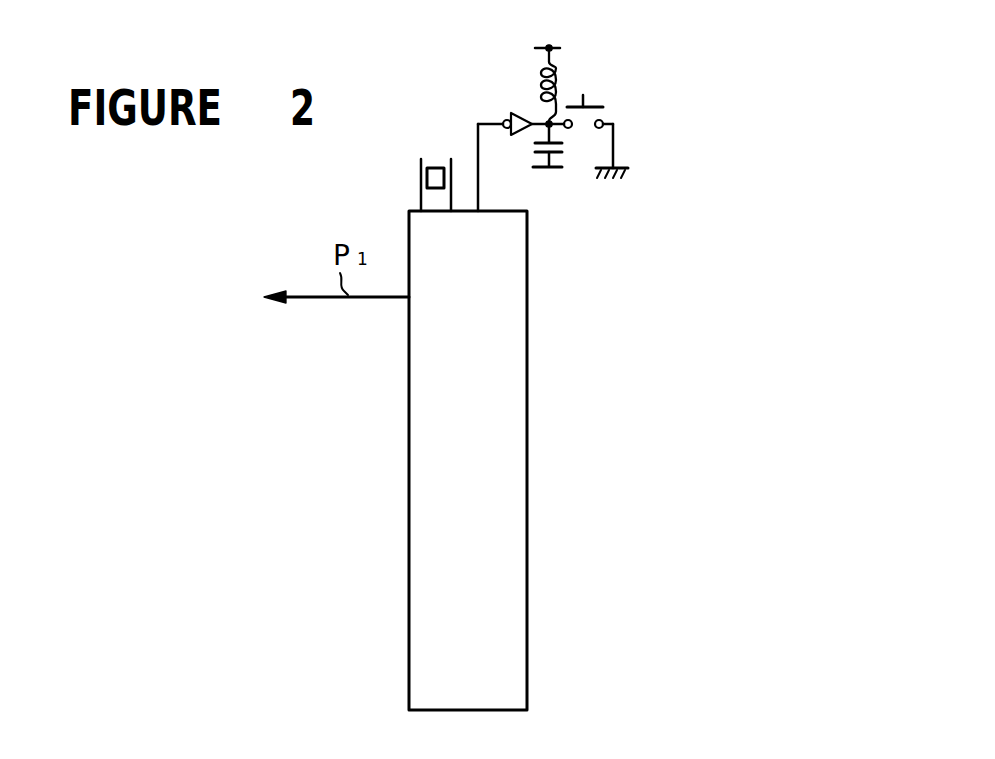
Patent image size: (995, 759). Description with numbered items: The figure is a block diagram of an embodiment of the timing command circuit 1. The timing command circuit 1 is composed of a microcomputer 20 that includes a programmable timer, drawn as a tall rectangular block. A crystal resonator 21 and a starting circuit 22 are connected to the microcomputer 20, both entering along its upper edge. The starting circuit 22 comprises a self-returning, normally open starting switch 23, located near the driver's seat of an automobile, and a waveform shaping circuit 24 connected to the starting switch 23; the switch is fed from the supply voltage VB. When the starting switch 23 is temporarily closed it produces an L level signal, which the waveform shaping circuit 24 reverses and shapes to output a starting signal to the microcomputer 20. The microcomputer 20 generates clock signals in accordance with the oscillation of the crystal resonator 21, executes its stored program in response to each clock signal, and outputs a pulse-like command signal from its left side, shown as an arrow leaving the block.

The timing command circuit 1 is at (538, 401).
The microcomputer 20 is at (528, 648).
The crystal resonator 21 is at (421, 180).
The starting circuit 22 is at (573, 80).
The starting switch 23 is at (582, 127).
The waveform shaping circuit 24 is at (513, 148).